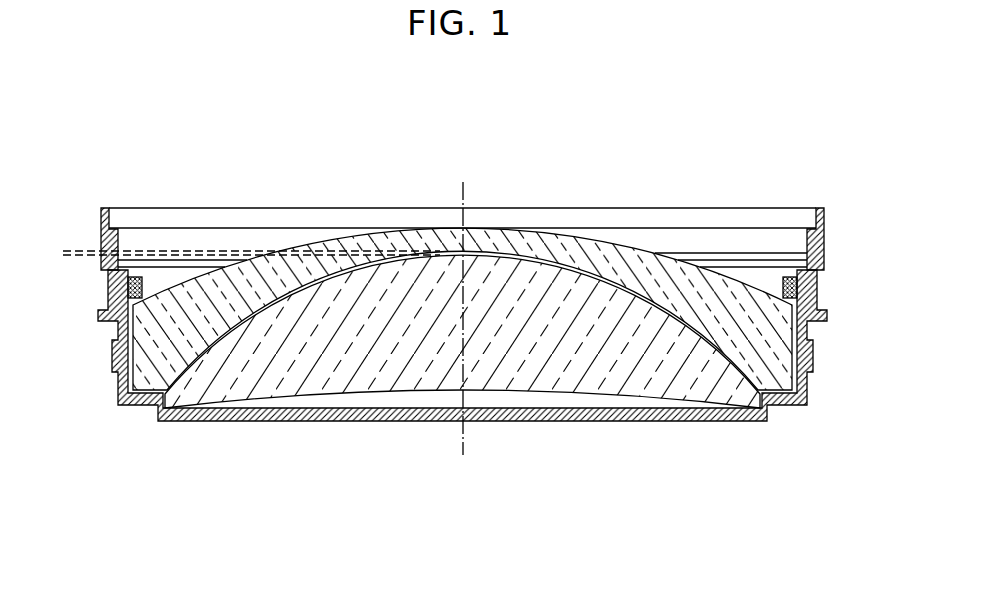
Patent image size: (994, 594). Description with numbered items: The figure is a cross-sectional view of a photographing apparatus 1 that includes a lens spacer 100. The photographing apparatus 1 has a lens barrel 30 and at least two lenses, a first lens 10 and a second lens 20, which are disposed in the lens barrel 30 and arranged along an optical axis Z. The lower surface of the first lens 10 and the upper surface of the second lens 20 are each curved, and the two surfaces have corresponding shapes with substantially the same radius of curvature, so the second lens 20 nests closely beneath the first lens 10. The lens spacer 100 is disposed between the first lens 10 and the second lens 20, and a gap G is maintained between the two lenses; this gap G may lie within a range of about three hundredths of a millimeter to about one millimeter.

The photographing apparatus 1 is at (760, 140).
The first lens 10 is at (780, 333).
The second lens 20 is at (695, 392).
The lens barrel 30 is at (826, 256).
The lens spacer 100 is at (770, 402).
The gap G is at (71, 227).
The optical axis Z is at (463, 182).